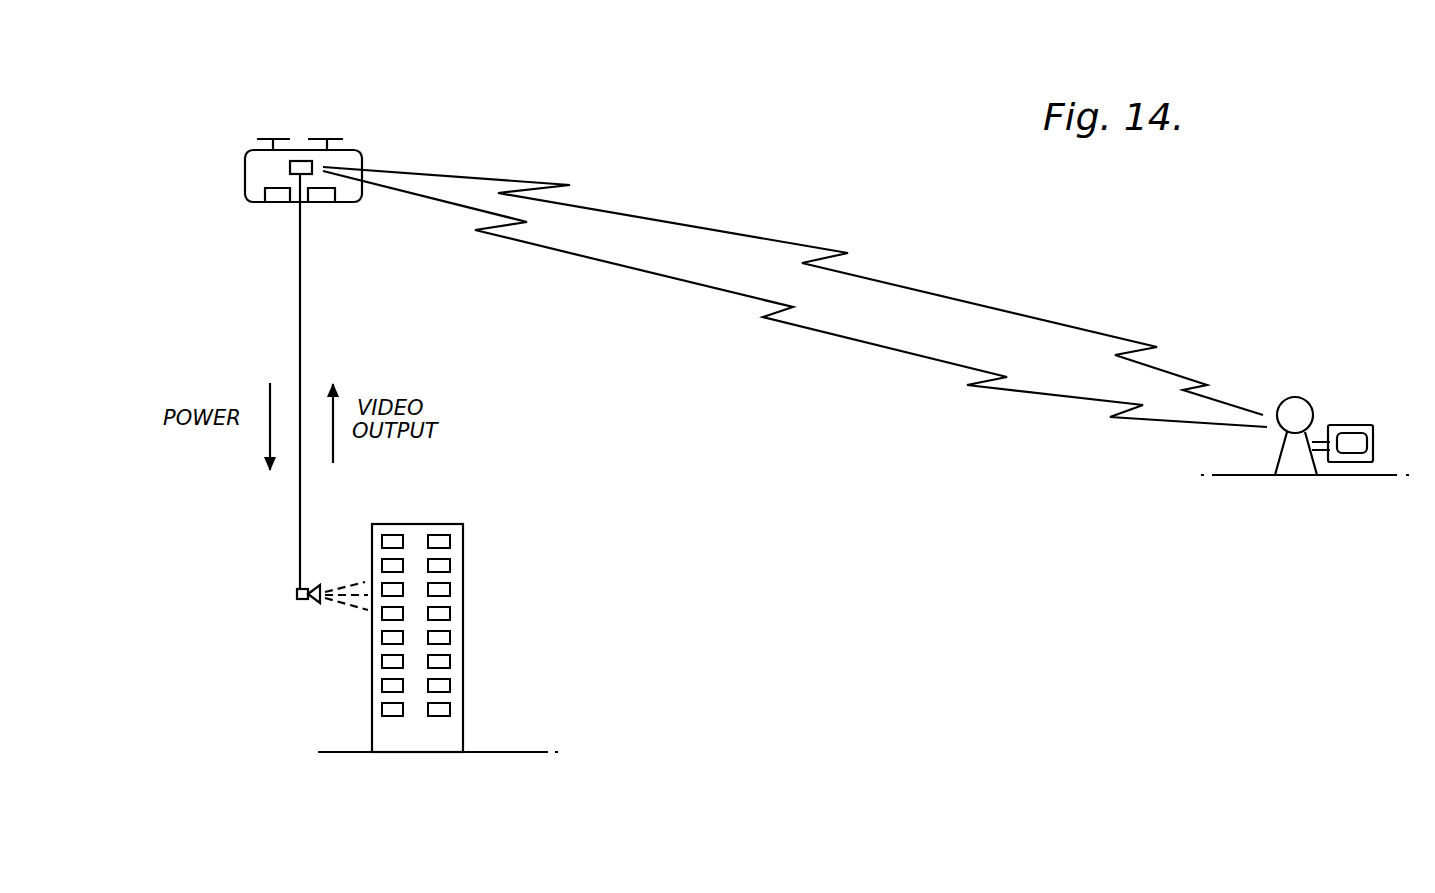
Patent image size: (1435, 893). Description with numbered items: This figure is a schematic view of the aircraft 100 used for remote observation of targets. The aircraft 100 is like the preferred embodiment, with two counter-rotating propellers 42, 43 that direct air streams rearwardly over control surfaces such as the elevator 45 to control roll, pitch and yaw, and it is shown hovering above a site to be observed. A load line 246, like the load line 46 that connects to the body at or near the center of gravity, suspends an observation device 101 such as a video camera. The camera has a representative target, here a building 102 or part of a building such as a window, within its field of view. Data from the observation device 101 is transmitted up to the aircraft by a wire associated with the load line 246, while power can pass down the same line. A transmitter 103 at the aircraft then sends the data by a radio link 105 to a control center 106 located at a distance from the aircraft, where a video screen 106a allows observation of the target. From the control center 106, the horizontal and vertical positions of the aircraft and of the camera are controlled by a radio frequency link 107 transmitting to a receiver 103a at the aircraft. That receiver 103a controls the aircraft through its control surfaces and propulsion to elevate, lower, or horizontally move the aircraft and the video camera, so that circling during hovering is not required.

The counter-rotating propeller 42 is at (265, 142).
The counter-rotating propeller 43 is at (337, 140).
The elevator 45 is at (283, 199).
The load line 46 is at (323, 199).
The aircraft 100 is at (285, 154).
The observation device 101 is at (299, 599).
The building 102 is at (465, 585).
The transmitter 103 is at (379, 109).
The receiver 103a is at (300, 161).
The radio link 105 is at (987, 307).
The control center 106 is at (1306, 417).
The video screen 106a is at (1350, 446).
The radio frequency link 107 is at (882, 350).
The load line 246 is at (302, 315).